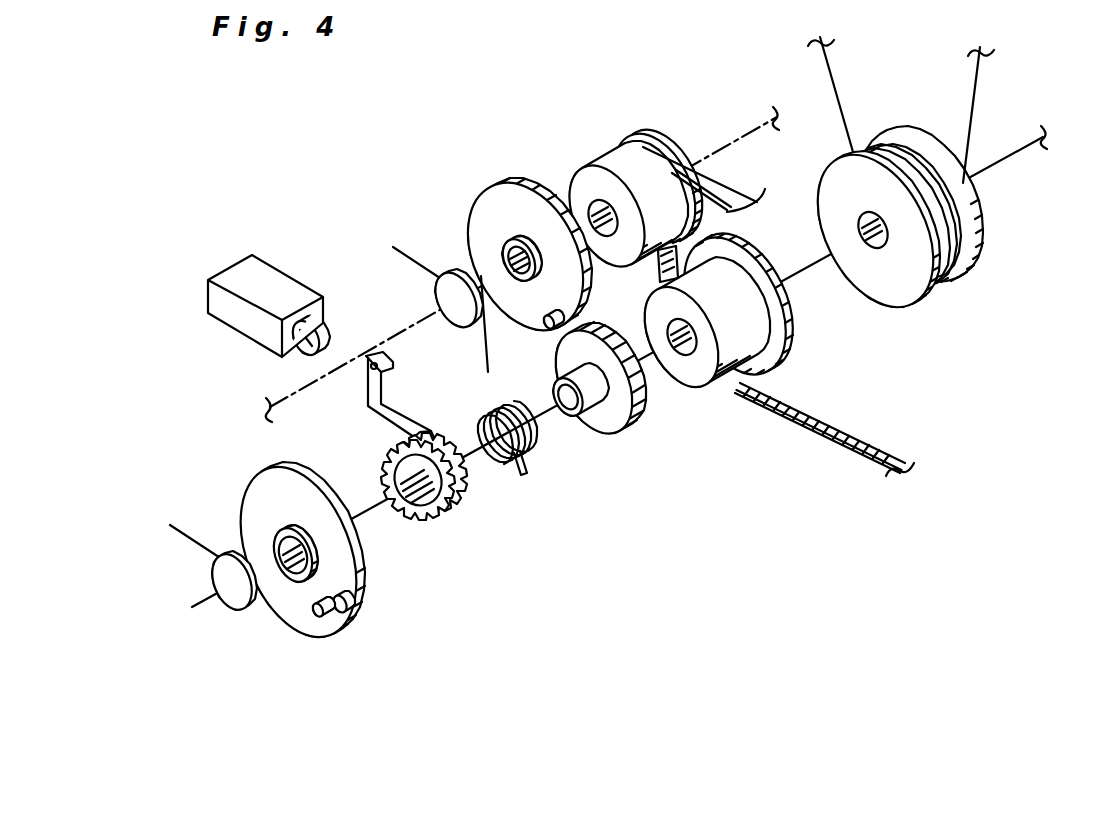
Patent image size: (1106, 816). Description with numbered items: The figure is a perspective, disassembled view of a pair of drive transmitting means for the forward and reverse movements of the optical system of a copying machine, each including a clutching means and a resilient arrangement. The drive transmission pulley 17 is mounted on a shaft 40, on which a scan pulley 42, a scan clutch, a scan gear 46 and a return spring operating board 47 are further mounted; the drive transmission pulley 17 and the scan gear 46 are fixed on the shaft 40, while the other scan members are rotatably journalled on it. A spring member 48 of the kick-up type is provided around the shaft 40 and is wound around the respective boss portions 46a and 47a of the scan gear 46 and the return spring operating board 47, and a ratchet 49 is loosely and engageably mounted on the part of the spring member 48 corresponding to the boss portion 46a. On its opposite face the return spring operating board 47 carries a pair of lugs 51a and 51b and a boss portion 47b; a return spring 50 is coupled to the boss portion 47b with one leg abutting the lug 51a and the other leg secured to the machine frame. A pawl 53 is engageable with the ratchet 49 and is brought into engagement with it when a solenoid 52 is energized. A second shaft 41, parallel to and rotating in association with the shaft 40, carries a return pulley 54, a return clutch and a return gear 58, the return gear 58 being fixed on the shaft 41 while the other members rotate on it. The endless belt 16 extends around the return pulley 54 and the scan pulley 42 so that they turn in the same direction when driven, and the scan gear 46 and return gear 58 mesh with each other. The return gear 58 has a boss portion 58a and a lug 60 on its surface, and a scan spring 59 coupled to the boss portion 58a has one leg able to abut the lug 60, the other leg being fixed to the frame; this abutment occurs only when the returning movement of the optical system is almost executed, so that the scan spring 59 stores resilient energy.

The endless belt 16 is at (850, 430).
The drive transmission pulley 17 is at (915, 276).
The shaft 40 is at (937, 203).
The shaft 41 is at (771, 118).
The scan pulley 42 is at (797, 340).
The scan gear 46 is at (628, 419).
The boss portion 46a is at (600, 403).
The return spring operating board 47 is at (332, 551).
The boss portion 47a is at (363, 533).
The boss portion 47b is at (287, 530).
The spring member 48 is at (543, 447).
The ratchet 49 is at (463, 503).
The return spring 50 is at (258, 600).
The lug 51a is at (350, 617).
The lug 51b is at (313, 617).
The solenoid 52 is at (272, 265).
The pawl 53 is at (403, 403).
The return pulley 54 is at (703, 202).
The return gear 58 is at (525, 239).
The boss portion 58a is at (530, 237).
The scan spring 59 is at (418, 248).
The lug 60 is at (548, 322).